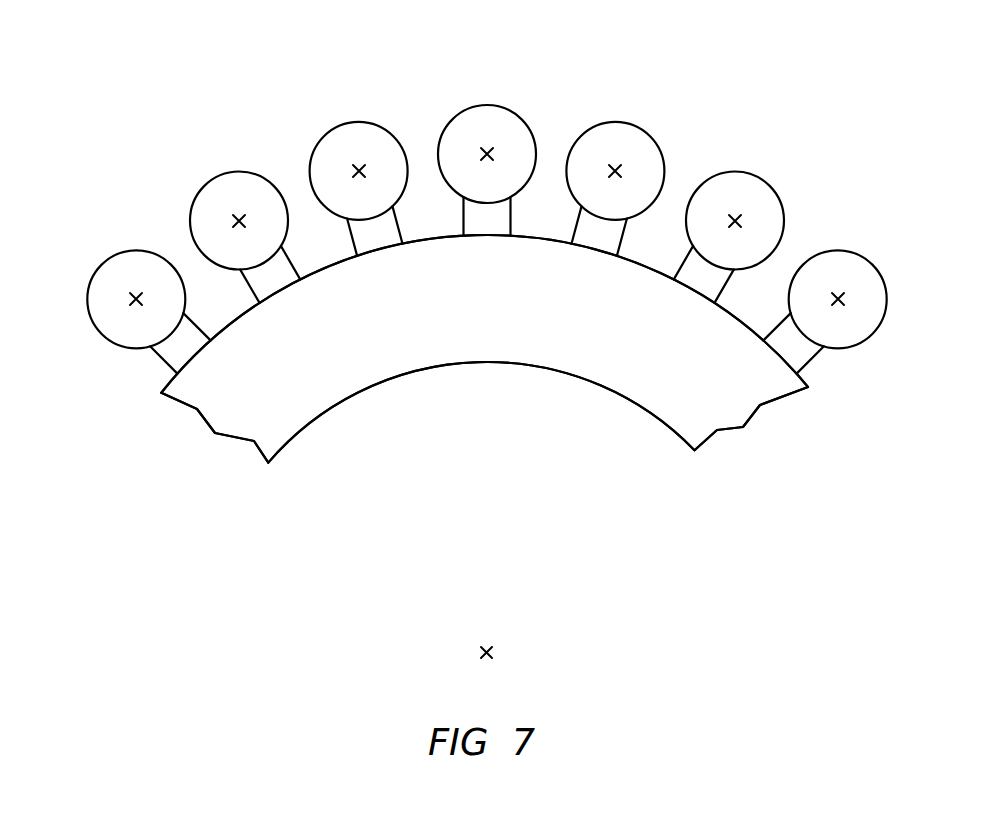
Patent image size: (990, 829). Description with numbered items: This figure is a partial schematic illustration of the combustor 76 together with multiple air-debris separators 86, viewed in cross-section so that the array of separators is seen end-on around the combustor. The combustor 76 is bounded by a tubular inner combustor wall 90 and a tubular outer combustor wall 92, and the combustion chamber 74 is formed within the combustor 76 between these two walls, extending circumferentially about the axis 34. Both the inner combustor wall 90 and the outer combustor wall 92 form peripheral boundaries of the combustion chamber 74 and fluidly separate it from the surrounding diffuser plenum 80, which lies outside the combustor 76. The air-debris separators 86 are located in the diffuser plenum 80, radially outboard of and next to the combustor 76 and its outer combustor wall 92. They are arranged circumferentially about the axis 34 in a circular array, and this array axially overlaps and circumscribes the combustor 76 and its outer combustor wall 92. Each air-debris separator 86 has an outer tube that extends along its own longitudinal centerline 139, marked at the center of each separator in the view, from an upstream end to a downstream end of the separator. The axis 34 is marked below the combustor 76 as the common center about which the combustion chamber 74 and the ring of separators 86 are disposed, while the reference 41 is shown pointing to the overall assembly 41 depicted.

The stator assembly 41 is at (829, 122).
The combustion chamber 74 is at (498, 318).
The combustor 76 is at (200, 432).
The diffuser plenum 80 is at (573, 92).
The air-debris separator 86 is at (193, 200).
The inner combustor wall 90 is at (680, 428).
The outer combustor wall 92 is at (798, 385).
The longitudinal centerline 139 is at (132, 298).
The axis 34 is at (490, 650).